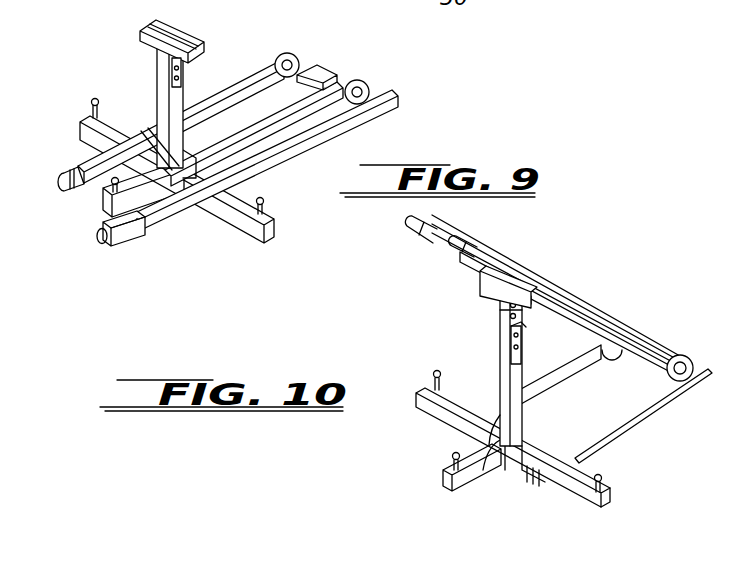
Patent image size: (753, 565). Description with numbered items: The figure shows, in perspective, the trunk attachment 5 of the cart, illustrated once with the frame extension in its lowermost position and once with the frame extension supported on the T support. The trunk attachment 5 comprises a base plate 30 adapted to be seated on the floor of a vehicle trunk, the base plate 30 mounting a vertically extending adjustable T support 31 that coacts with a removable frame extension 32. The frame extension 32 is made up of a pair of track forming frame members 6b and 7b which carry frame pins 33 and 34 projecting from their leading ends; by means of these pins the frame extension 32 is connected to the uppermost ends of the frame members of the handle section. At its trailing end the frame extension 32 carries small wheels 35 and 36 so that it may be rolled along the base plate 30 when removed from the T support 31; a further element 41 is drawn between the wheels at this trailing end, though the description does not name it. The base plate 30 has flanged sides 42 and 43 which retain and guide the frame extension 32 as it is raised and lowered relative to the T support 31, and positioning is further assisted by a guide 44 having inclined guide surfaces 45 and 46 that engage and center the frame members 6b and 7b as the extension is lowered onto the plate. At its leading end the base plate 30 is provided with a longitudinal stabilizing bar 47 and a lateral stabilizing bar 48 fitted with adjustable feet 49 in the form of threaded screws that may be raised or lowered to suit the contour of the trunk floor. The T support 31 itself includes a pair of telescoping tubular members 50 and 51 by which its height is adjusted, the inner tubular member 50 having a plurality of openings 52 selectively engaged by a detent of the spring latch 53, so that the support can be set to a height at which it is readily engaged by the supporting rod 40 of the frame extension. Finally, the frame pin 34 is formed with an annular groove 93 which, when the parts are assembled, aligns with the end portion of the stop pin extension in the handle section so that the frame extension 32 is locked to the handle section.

In FIG. 9, the trunk attachment 5 is at (226, 252).
In FIG. 10, the trunk attachment 5 is at (645, 436).
In FIG. 9, the frame member 6b is at (148, 222).
In FIG. 9, the frame member 7b is at (75, 166).
In FIG. 9, the base plate 30 is at (292, 163).
In FIG. 10, the base plate 30 is at (603, 410).
In FIG. 9, the T support 31 is at (138, 32).
In FIG. 10, the T support 31 is at (480, 283).
In FIG. 9, the frame extension 32 is at (140, 236).
In FIG. 10, the frame extension 32 is at (527, 262).
In FIG. 9, the frame pin 33 is at (106, 245).
In FIG. 9, the frame pin 34 is at (72, 190).
In FIG. 9, the wheel 35 is at (371, 90).
In FIG. 10, the wheel 35 is at (684, 355).
In FIG. 9, the wheel 36 is at (296, 64).
In FIG. 10, the wheel 36 is at (612, 362).
In FIG. 9, the supporting rod 40 is at (194, 160).
In FIG. 9, the cross plate 41 is at (337, 75).
In FIG. 9, the flanged side 42 is at (262, 70).
In FIG. 10, the flanged side 42 is at (667, 412).
In FIG. 9, the flanged side 43 is at (333, 133).
In FIG. 10, the flanged side 43 is at (582, 356).
In FIG. 9, the guide 44 is at (137, 163).
In FIG. 10, the guide 44 is at (517, 473).
In FIG. 9, the inclined guide surface 45 is at (200, 173).
In FIG. 10, the inclined guide surface 45 is at (513, 435).
In FIG. 9, the inclined guide surface 46 is at (146, 130).
In FIG. 10, the inclined guide surface 46 is at (489, 423).
In FIG. 10, the longitudinal stabilizing bar 47 is at (453, 493).
In FIG. 10, the lateral stabilizing bar 48 is at (563, 493).
In FIG. 9, the adjustable feet 49 is at (108, 196).
In FIG. 10, the adjustable feet 49 is at (436, 370).
In FIG. 10, the inner tubular member 50 is at (500, 307).
In FIG. 9, the outer tubular member 51 is at (157, 70).
In FIG. 10, the outer tubular member 51 is at (500, 337).
In FIG. 10, the openings 52 is at (525, 305).
In FIG. 9, the spring latch 53 is at (182, 78).
In FIG. 10, the spring latch 53 is at (522, 340).
In FIG. 9, the annular groove 93 is at (60, 189).
In FIG. 10, the annular groove 93 is at (410, 230).